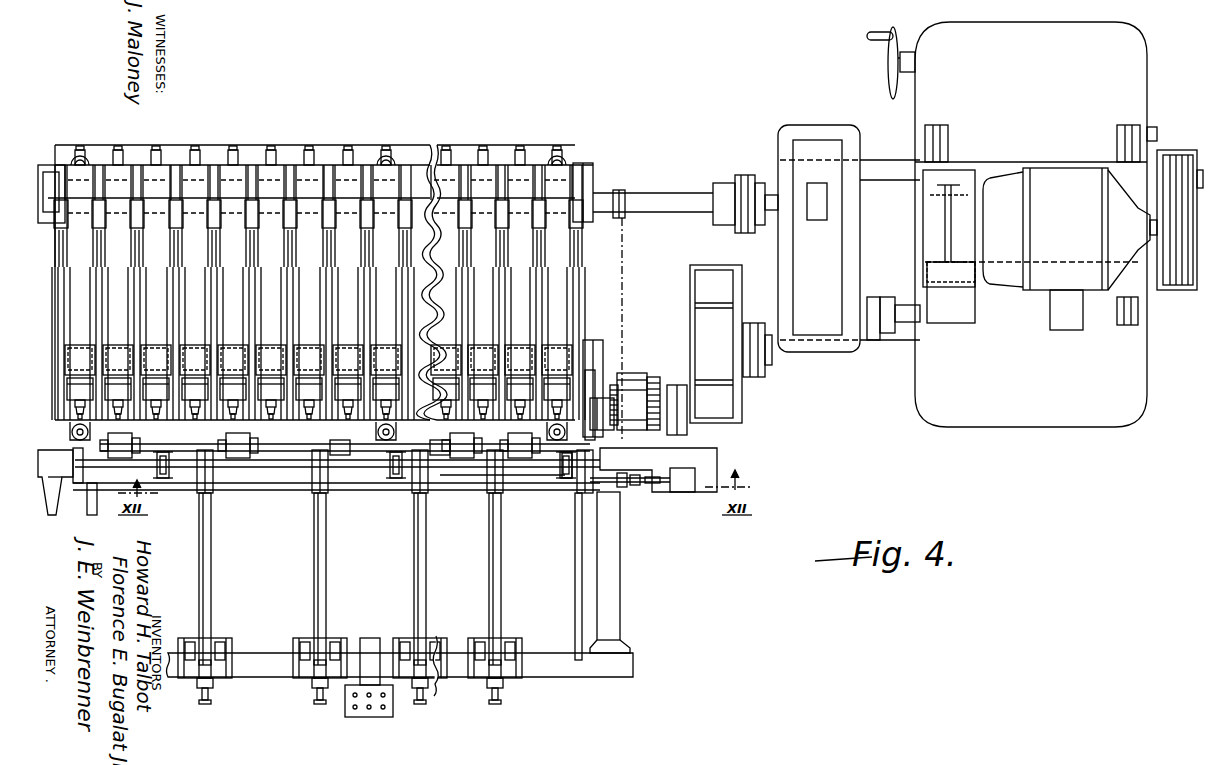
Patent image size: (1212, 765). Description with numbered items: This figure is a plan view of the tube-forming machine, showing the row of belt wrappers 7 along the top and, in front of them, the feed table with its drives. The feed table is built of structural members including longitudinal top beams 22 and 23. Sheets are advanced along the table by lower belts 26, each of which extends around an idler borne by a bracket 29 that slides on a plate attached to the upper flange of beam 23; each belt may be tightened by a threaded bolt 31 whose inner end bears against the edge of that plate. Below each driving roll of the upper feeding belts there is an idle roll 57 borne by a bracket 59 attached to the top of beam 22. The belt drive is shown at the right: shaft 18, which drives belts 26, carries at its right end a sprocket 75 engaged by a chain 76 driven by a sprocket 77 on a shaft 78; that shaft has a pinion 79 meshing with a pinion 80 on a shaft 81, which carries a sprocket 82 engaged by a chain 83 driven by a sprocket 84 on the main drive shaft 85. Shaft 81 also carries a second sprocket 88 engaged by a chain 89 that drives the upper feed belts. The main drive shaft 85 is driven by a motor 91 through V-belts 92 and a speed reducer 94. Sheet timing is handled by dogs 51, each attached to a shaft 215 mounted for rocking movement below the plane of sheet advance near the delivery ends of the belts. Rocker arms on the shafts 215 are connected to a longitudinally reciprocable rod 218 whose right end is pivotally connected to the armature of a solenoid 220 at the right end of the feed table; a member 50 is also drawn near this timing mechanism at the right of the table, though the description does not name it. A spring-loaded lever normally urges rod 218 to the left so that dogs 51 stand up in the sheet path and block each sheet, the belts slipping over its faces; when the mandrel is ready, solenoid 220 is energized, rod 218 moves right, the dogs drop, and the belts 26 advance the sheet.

The belt wrapper 7 is at (157, 188).
The shaft 18 is at (270, 470).
The top beam 22 is at (55, 455).
The top beam 23 is at (583, 677).
The lower belt 26 is at (98, 510).
The bracket 29 is at (192, 678).
The threaded bolt 31 is at (213, 698).
The lever bar 50 is at (575, 578).
The dog 51 is at (158, 470).
The idle roll 57 is at (125, 440).
The bracket 59 is at (345, 437).
The sprocket 75 is at (608, 485).
The chain 76 is at (610, 448).
The sprocket 77 is at (604, 430).
The shaft 78 is at (642, 420).
The pinion 79 is at (672, 430).
The pinion 80 is at (660, 392).
The shaft 81 is at (635, 383).
The sprocket 82 is at (630, 384).
The chain 83 is at (625, 263).
The sprocket 84 is at (622, 192).
The main drive shaft 85 is at (678, 200).
The second sprocket 88 is at (593, 360).
The chain 89 is at (586, 408).
The motor 91 is at (1080, 238).
The V-belts 92 is at (1176, 60).
The speed reducer 94 is at (830, 250).
The shaft 215 is at (563, 480).
The rod 218 is at (530, 478).
The solenoid 220 is at (683, 493).